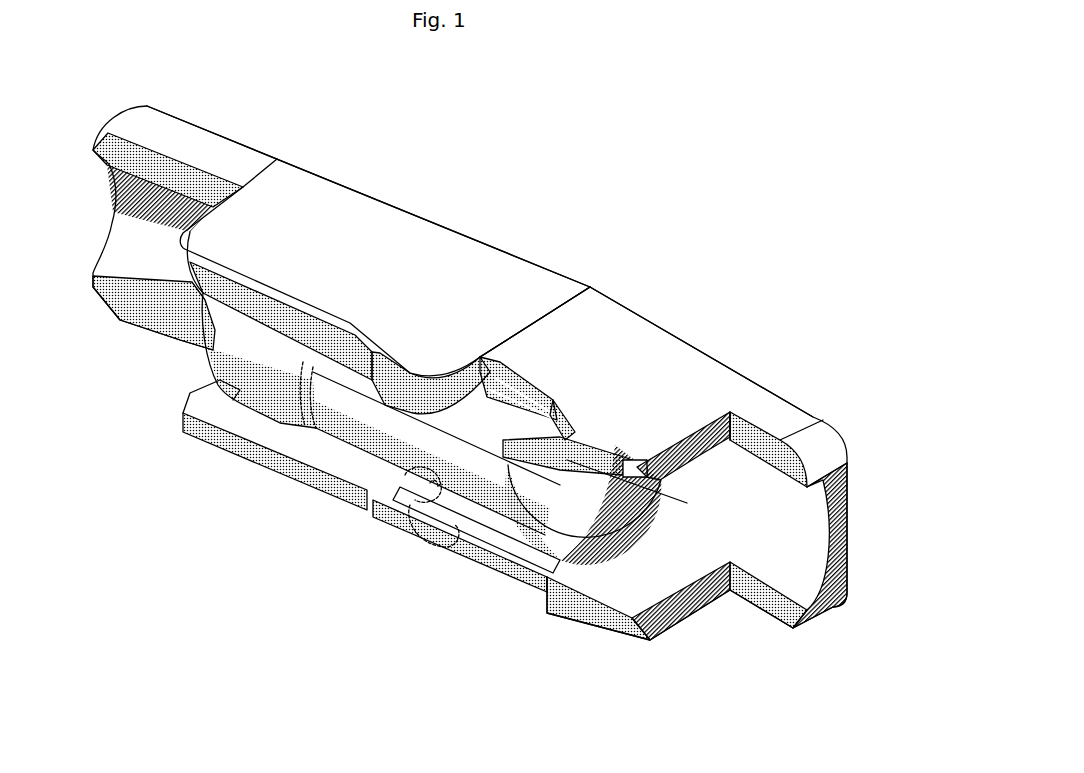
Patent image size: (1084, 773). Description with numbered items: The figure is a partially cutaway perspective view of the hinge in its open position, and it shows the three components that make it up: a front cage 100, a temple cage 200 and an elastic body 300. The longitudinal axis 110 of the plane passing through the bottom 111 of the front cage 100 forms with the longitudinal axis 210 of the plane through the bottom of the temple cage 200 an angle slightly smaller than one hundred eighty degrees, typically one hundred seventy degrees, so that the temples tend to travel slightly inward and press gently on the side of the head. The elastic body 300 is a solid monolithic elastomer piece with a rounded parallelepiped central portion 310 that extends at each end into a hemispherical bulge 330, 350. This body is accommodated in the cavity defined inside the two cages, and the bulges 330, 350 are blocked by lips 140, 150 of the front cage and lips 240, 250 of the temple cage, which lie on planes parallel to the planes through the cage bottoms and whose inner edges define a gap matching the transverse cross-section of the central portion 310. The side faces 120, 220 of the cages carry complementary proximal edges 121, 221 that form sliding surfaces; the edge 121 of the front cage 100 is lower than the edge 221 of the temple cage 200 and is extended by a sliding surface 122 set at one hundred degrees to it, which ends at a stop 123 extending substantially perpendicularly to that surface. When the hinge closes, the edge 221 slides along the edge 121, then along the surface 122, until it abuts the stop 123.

The front cage 100 is at (770, 263).
The longitudinal axis 110 is at (758, 380).
The bottom 111 is at (850, 533).
The side face 120 is at (637, 389).
The proximal edge 121 is at (533, 325).
The sliding surface 122 is at (510, 393).
The stop 123 is at (560, 428).
The lip 140 is at (683, 520).
The lip 150 is at (503, 550).
The temple cage 200 is at (490, 165).
The longitudinal axis 210 is at (323, 177).
The side face 220 is at (395, 289).
The proximal edge 221 is at (550, 307).
The lip 240 is at (227, 312).
The lip 250 is at (253, 450).
The elastic body 300 is at (330, 443).
The central portion 310 is at (390, 420).
The bulge 330 is at (237, 365).
The bulge 350 is at (567, 502).